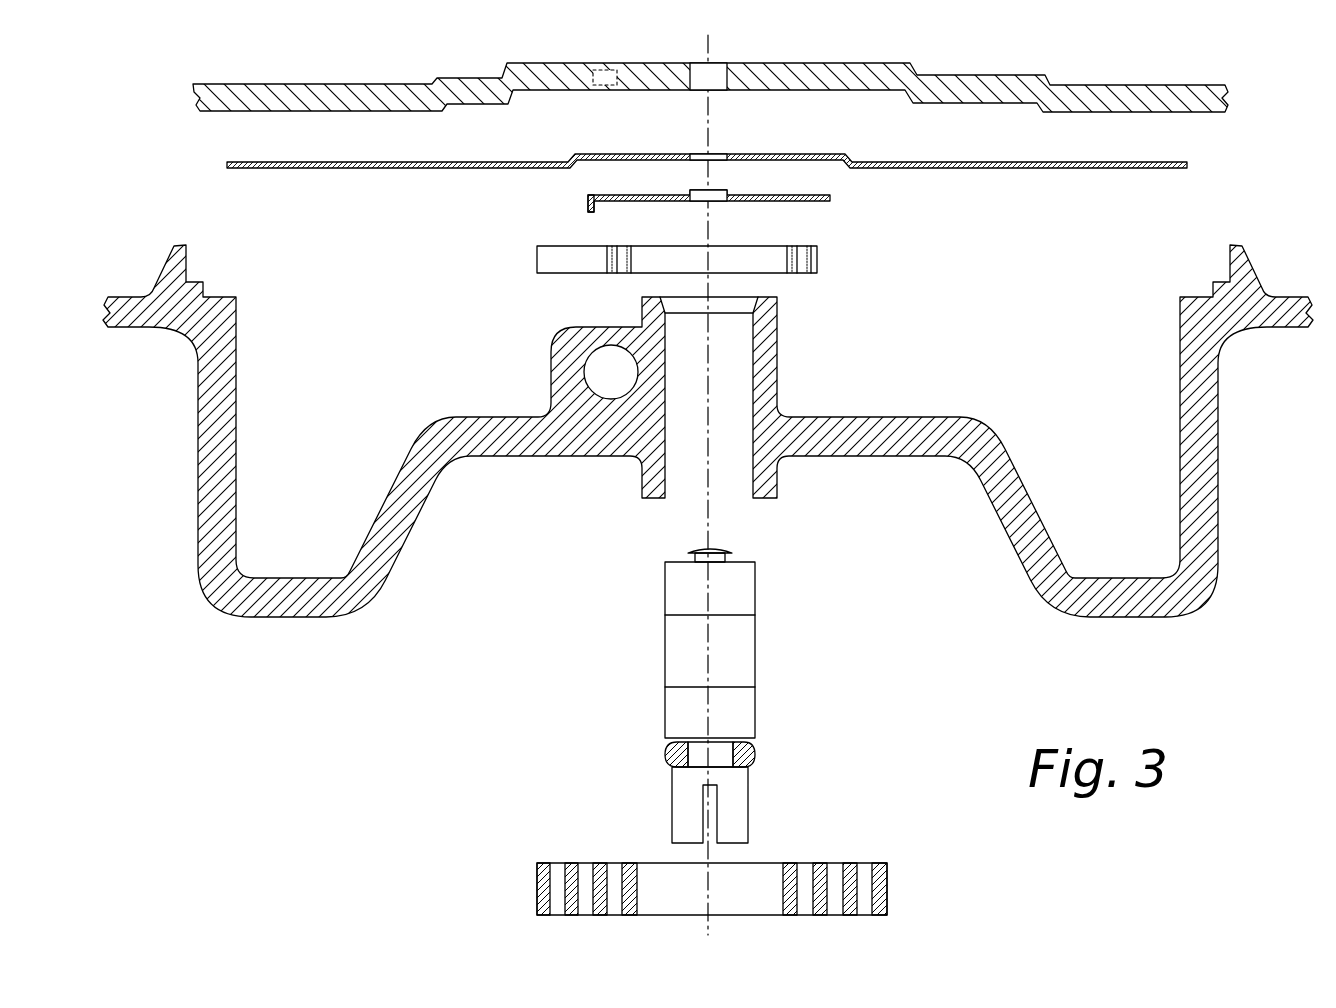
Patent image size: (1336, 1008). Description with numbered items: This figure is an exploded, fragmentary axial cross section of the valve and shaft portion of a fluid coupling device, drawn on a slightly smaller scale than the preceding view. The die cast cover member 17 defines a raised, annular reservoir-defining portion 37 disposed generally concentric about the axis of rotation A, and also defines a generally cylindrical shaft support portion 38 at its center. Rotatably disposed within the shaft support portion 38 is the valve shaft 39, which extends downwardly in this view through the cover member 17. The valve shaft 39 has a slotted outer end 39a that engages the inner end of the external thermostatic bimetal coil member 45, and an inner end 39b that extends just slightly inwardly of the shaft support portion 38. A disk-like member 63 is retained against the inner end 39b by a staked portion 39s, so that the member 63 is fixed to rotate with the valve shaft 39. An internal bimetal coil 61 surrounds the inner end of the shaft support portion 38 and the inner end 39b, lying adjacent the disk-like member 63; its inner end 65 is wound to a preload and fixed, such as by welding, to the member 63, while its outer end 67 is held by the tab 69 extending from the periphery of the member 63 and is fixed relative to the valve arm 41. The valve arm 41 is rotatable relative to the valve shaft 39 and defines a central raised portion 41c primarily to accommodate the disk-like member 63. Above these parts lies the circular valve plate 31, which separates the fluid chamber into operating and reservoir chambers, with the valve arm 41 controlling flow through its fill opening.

The cover member 17 is at (1292, 328).
The valve plate 31 is at (1157, 84).
The reservoir-defining portion 37 is at (313, 612).
The shaft support portion 38 is at (768, 345).
The valve shaft 39 is at (728, 686).
The outer end of valve shaft 39a is at (740, 806).
The inner end of valve shaft 39b is at (750, 593).
The staked portion 39s is at (698, 546).
The axis of rotation A is at (712, 651).
The valve arm 41 is at (1047, 163).
The central raised portion 41c is at (805, 153).
The thermostatic bimetal coil member 45 is at (537, 887).
The internal bimetal coil 61 is at (817, 259).
The disk-like member 63 is at (810, 200).
The inner end of internal bimetal coil 65 is at (632, 258).
The outer end of internal bimetal coil 67 is at (537, 259).
The tab 69 is at (580, 222).